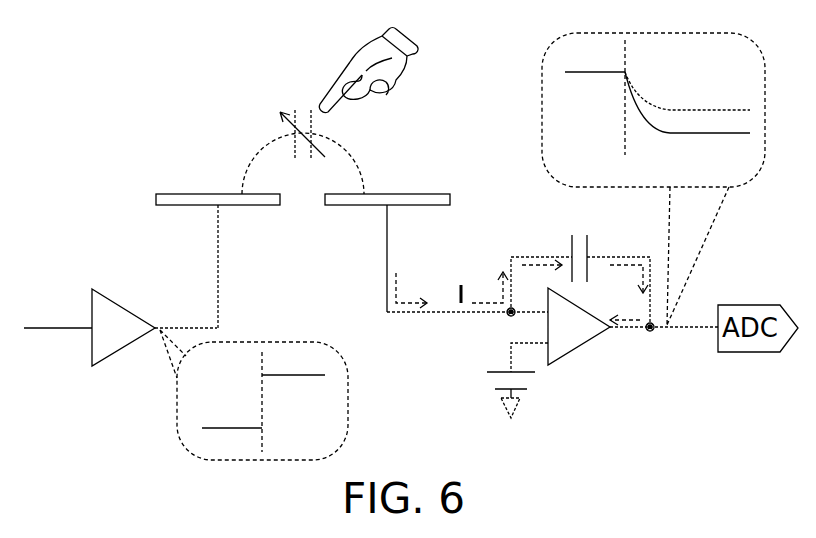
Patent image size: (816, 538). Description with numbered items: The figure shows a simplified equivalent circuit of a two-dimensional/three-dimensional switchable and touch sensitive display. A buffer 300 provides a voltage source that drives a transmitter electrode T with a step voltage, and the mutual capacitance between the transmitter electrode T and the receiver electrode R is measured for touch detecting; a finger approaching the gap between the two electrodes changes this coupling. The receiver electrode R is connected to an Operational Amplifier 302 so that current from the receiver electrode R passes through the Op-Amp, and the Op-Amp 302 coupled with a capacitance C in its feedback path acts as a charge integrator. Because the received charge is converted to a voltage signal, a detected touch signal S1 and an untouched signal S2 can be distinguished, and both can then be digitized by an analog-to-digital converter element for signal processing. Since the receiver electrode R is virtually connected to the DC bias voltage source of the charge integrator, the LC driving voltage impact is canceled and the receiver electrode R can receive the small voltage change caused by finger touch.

The driver amplifier 300 is at (124, 347).
The Operational Amplifier 302 is at (578, 348).
The transmitter electrode T is at (218, 193).
The receiver electrode R is at (388, 193).
The capacitance C is at (580, 264).
The detected touch signal S1 is at (707, 110).
The untouched signal S2 is at (710, 133).